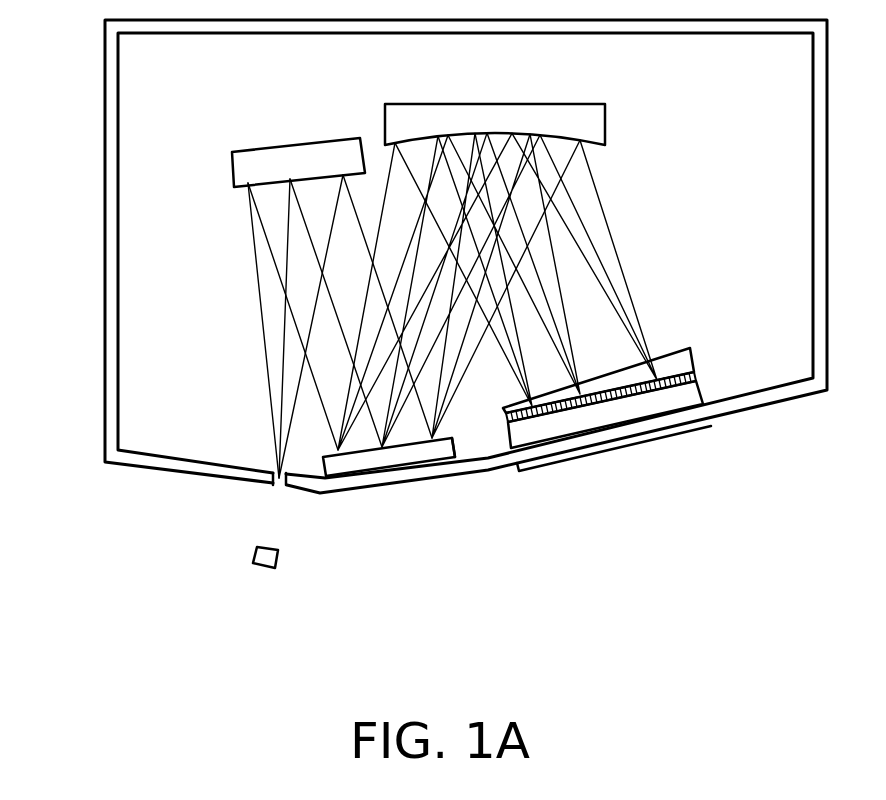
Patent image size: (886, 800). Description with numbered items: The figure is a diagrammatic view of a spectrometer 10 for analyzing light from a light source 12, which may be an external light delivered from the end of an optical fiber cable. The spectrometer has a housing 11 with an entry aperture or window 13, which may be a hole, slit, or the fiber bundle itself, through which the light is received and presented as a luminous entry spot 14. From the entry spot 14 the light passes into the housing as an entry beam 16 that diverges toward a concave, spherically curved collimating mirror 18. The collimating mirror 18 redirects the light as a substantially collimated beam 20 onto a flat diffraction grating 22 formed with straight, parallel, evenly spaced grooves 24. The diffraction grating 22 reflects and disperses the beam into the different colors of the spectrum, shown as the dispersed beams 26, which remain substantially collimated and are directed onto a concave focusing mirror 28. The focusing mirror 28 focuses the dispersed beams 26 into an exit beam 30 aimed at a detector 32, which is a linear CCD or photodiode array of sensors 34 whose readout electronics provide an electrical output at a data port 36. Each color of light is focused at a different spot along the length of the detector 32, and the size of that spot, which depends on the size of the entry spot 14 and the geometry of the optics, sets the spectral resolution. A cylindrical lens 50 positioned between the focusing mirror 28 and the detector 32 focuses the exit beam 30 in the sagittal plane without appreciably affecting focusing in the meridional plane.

The spectrometer 10 is at (74, 257).
The housing 11 is at (493, 462).
The light source 12 is at (255, 555).
The entry aperture or window 13 is at (276, 486).
The entry spot 14 is at (275, 473).
The entry beam 16 is at (268, 403).
The collimating mirror 18 is at (265, 181).
The collimated beam 20 is at (305, 389).
The diffraction grating 22 is at (378, 458).
The grooves 24 is at (410, 447).
The dispersed beams 26 is at (390, 181).
The focusing mirror 28 is at (497, 133).
The exit beam 30 is at (633, 282).
The detector 32 is at (622, 398).
The sensors 34 is at (687, 385).
The data port 36 is at (572, 463).
The cylindrical lens 50 is at (682, 363).